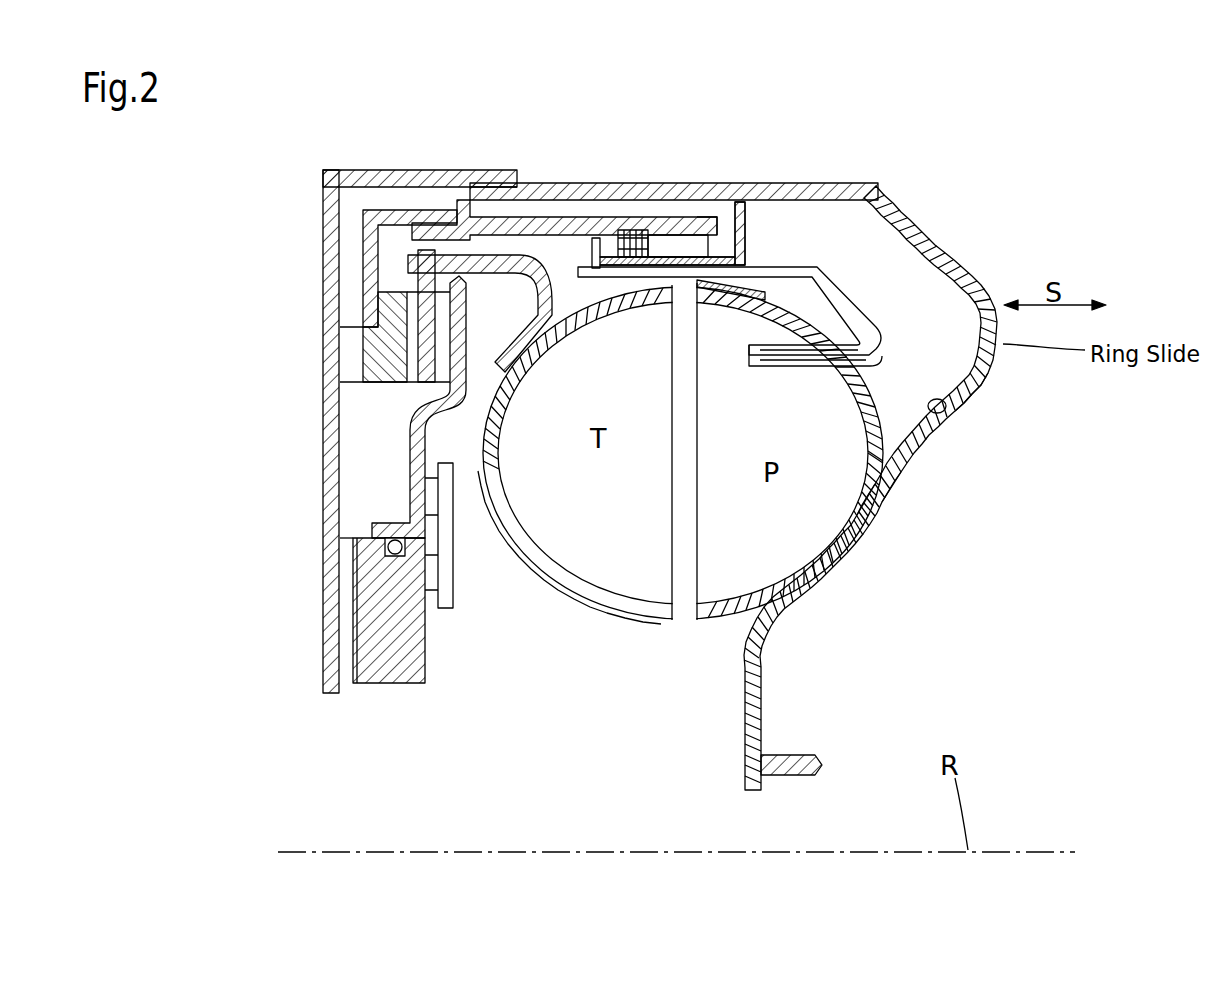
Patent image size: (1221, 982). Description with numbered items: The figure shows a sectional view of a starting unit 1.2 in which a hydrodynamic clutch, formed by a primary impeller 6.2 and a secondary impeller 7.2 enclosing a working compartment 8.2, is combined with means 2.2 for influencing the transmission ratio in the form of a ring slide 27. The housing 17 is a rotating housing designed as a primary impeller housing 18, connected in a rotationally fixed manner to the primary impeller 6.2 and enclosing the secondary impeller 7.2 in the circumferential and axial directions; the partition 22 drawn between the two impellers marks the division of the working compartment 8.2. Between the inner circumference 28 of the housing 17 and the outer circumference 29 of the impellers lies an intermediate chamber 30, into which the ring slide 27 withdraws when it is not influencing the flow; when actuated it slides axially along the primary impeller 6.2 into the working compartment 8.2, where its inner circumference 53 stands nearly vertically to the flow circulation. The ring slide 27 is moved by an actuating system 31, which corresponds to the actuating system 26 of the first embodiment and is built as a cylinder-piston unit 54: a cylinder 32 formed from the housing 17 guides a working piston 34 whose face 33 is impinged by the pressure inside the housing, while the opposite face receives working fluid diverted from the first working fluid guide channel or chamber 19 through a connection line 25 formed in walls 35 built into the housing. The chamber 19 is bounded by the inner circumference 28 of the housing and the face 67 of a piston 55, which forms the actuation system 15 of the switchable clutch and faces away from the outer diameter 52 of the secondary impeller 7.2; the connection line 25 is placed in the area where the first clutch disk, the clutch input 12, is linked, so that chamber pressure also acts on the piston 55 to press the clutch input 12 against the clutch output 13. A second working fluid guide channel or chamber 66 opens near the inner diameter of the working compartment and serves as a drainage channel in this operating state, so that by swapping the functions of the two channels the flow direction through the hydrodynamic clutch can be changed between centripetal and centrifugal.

The starting unit 1.2 is at (656, 414).
The means for influencing the transmission ratio 2.2 is at (855, 255).
The primary impeller 6.2 is at (889, 488).
The secondary impeller 7.2 is at (568, 592).
The working compartment 8.2 is at (620, 510).
The clutch input 12 is at (380, 355).
The clutch output 13 is at (415, 372).
The actuation system 15 is at (403, 492).
The piston 55 is at (336, 535).
The housing 17 is at (930, 452).
The primary impeller housing 18 is at (942, 418).
The first working fluid guide channel or chamber 19 is at (385, 446).
The partition 22 is at (676, 320).
The connection line 25 is at (347, 232).
The actuating system 26 is at (668, 185).
The ring slide 27 is at (975, 376).
The inner circumference of housing 28 is at (960, 398).
The outer circumference of the impellers 29 is at (812, 322).
The intermediate chamber 30 is at (756, 358).
The actuating system 31 is at (637, 196).
The cylinder-piston unit 54 is at (635, 147).
The cylinder 32 is at (707, 205).
The face 33 is at (583, 215).
The working piston 34 is at (684, 236).
The walls 35 is at (372, 266).
The outer diameter of the secondary impeller 52 is at (545, 575).
The inner circumference 53 is at (800, 362).
The second working fluid guide channel or chamber 66 is at (725, 688).
The face of piston 67 is at (340, 545).